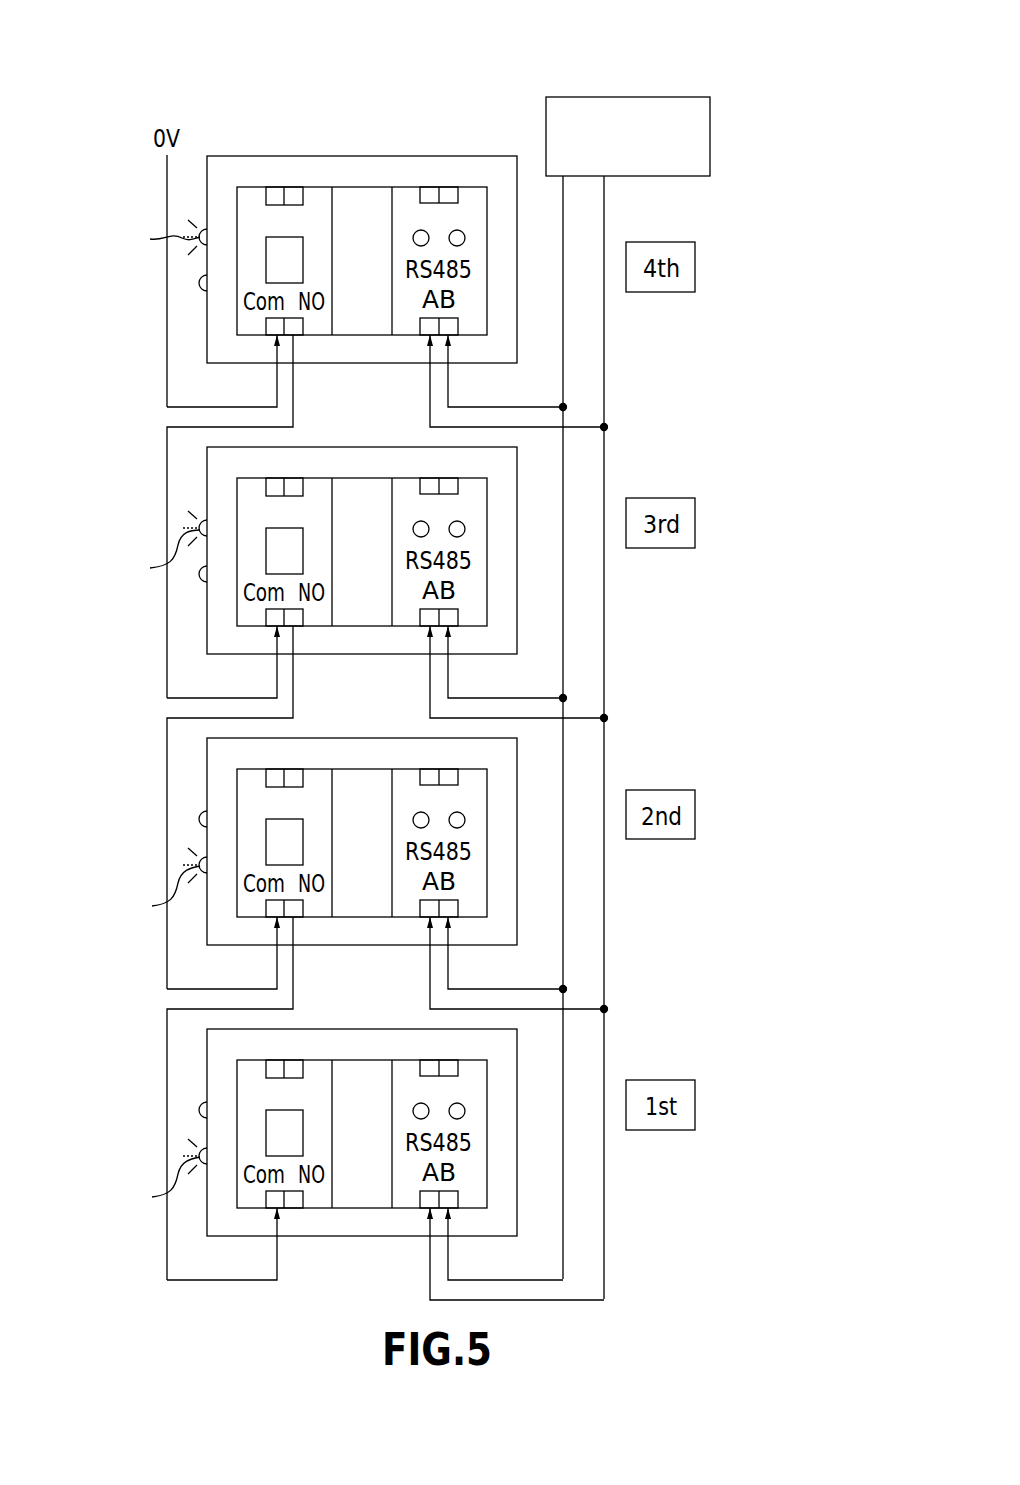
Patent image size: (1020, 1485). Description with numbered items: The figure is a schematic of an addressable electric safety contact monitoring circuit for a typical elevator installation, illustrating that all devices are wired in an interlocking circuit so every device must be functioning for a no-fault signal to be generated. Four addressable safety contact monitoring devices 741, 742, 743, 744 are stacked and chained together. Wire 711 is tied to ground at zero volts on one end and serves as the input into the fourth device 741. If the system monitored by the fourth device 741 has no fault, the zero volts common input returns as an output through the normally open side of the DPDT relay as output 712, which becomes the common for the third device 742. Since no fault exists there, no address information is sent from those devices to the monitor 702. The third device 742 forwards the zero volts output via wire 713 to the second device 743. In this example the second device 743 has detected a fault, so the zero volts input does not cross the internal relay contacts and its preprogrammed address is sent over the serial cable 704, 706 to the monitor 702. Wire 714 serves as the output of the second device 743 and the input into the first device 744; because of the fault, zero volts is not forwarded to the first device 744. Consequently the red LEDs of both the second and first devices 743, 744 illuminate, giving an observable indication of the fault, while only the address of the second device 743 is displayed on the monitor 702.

The monitor 702 is at (628, 95).
The serial cable 704 is at (604, 337).
The serial cable 706 is at (563, 357).
The wire 711 is at (167, 385).
The output 712 is at (293, 390).
The output 713 is at (293, 681).
The wire 714 is at (293, 972).
The fourth addressable safety contact monitoring device 741 is at (383, 335).
The third addressable safety contact monitoring device 742 is at (383, 626).
The second addressable safety contact monitoring device 743 is at (383, 917).
The first addressable safety contact monitoring device 744 is at (383, 1208).